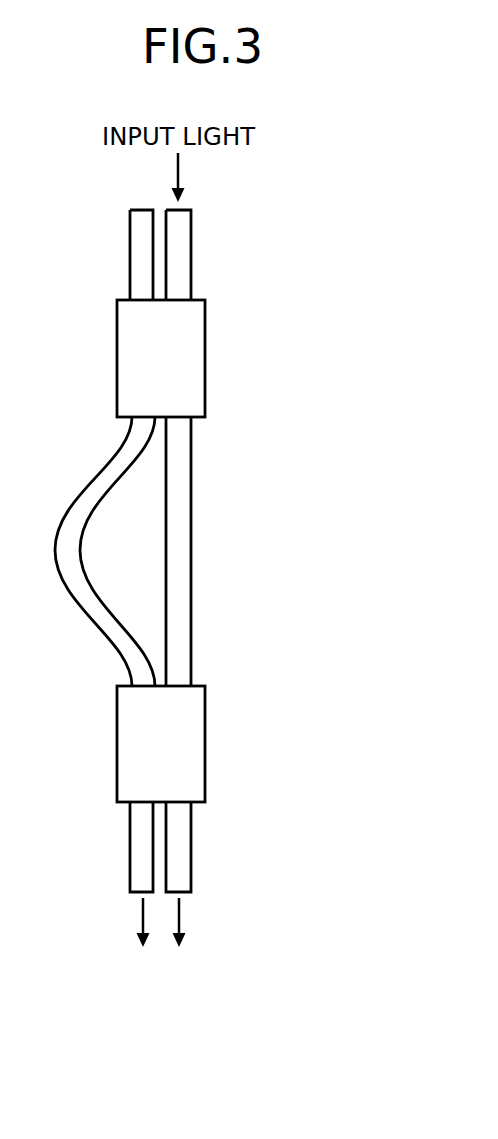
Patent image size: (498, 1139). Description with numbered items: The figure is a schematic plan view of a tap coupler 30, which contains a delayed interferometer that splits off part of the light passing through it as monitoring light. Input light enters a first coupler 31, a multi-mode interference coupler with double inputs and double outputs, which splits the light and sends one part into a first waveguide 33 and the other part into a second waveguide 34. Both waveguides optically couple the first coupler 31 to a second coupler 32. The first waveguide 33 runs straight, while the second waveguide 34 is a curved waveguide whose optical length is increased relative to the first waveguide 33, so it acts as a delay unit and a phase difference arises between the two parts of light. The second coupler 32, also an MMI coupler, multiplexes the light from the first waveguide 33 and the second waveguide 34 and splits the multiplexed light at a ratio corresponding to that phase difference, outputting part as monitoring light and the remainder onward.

The tap coupler 30 is at (343, 153).
The first coupler 31 is at (123, 335).
The second coupler 32 is at (126, 751).
The first waveguide 33 is at (183, 533).
The second waveguide 34 is at (86, 495).